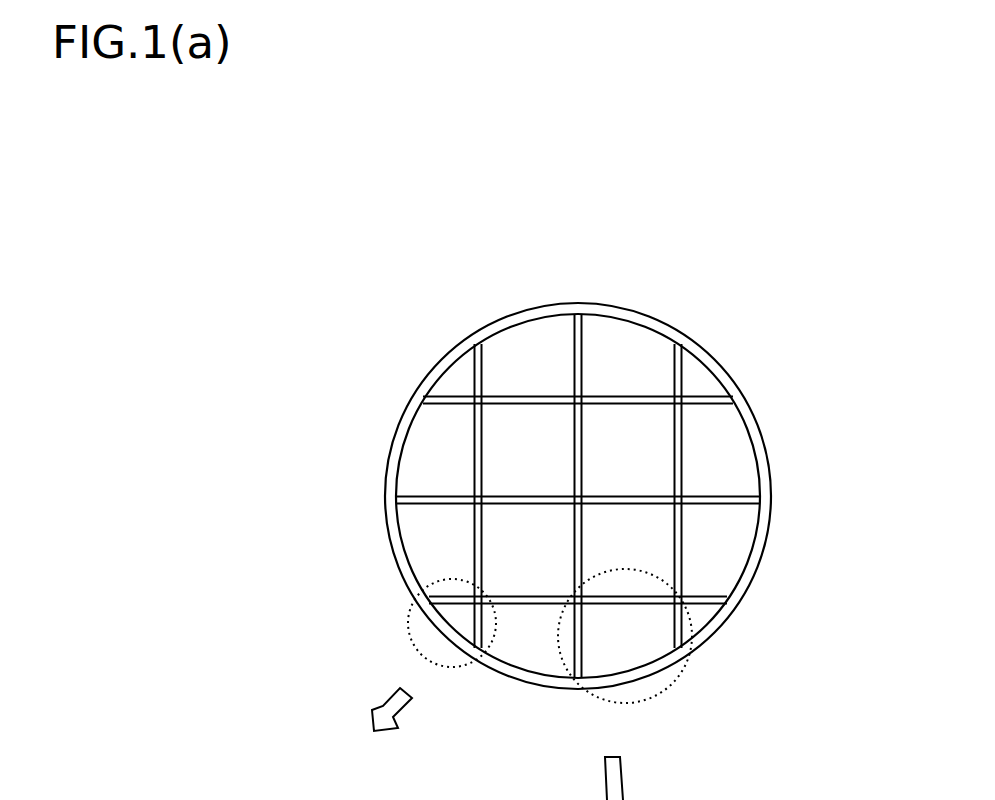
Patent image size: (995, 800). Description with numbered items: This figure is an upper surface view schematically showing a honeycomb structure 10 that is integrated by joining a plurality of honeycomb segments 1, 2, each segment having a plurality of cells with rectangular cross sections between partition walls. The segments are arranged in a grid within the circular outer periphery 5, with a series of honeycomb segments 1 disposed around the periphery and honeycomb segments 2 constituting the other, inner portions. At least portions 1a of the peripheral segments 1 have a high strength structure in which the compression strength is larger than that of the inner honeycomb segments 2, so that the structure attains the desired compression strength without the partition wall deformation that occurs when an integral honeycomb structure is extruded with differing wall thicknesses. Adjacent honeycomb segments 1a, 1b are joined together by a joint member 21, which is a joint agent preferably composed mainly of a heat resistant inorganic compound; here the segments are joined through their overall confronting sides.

The honeycomb structure 10 is at (570, 426).
The honeycomb segment 1 is at (570, 464).
The honeycomb segment 1a is at (574, 527).
The honeycomb segment 1b is at (742, 522).
The honeycomb segment 2 is at (515, 476).
The joint member 21 is at (620, 403).
The outer periphery 5 is at (504, 496).